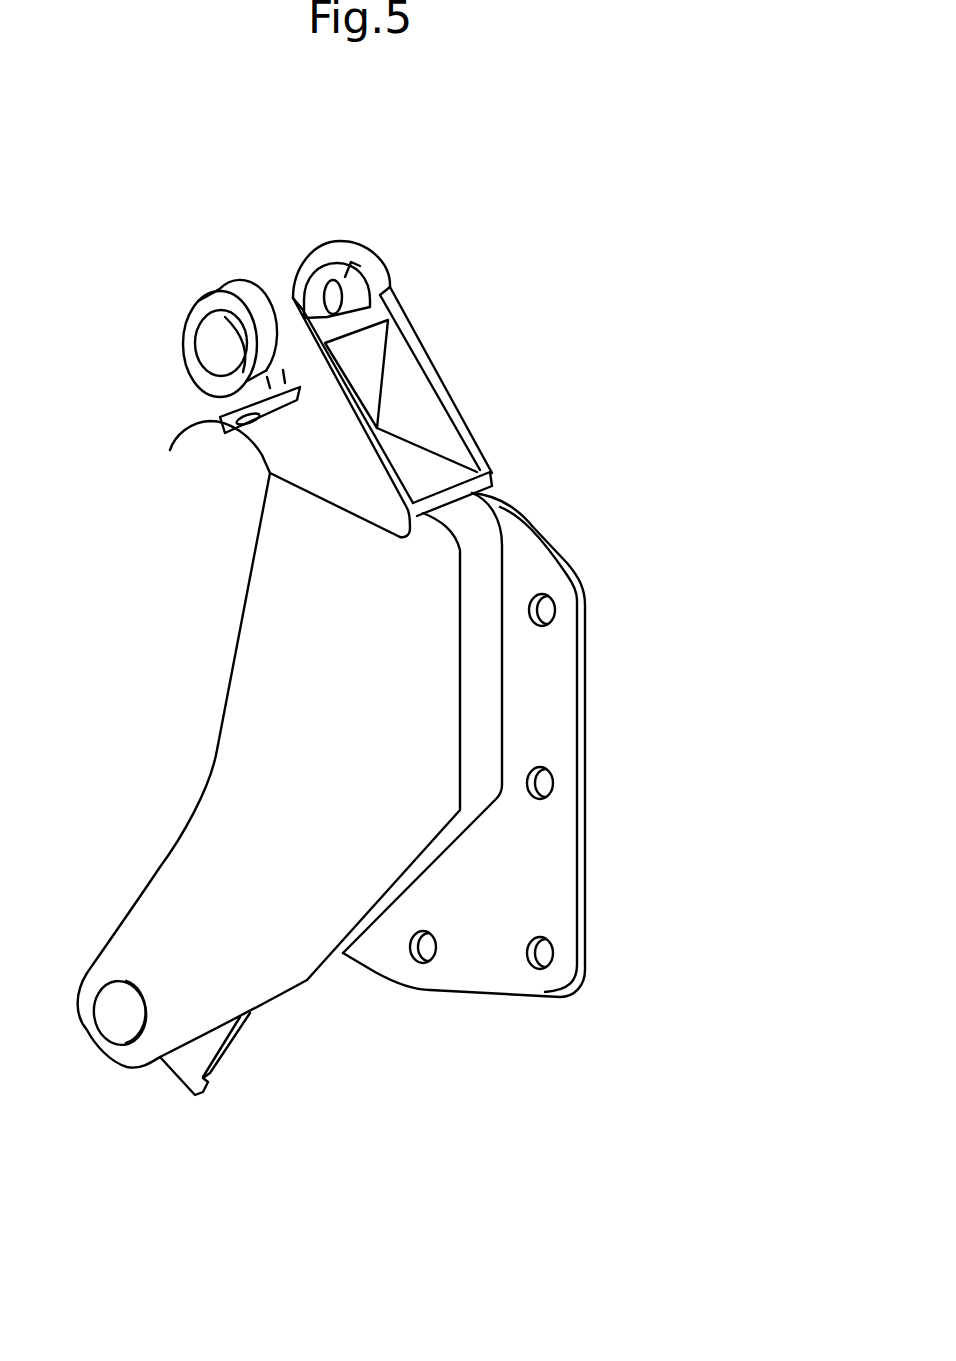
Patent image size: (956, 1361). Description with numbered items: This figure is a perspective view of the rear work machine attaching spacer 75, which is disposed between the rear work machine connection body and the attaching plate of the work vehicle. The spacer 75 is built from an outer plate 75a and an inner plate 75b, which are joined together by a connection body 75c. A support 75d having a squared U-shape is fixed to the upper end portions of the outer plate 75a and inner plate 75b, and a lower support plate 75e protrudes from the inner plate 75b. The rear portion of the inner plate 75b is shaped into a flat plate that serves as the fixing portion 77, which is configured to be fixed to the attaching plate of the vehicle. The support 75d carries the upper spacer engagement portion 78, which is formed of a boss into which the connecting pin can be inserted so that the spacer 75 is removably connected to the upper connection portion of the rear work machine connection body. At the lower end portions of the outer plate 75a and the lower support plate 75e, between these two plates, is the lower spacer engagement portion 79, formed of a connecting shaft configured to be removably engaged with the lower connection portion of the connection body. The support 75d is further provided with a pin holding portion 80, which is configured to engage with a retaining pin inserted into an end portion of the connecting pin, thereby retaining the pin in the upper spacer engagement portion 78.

The rear work machine attaching spacer 75 is at (378, 795).
The outer plate 75a is at (270, 665).
The inner plate 75b is at (540, 547).
The connection body 75c is at (480, 693).
The support 75d is at (407, 393).
The lower support plate 75e is at (208, 1043).
The fixing portion 77 is at (488, 950).
The upper spacer engagement portion 78 is at (342, 256).
The lower spacer engagement portion 79 is at (117, 1017).
The pin holding portion 80 is at (190, 430).